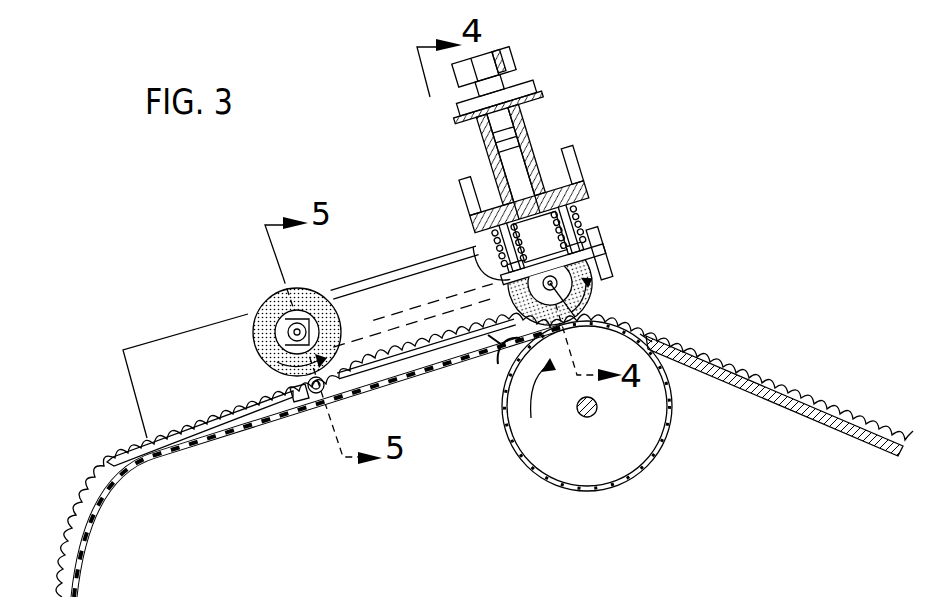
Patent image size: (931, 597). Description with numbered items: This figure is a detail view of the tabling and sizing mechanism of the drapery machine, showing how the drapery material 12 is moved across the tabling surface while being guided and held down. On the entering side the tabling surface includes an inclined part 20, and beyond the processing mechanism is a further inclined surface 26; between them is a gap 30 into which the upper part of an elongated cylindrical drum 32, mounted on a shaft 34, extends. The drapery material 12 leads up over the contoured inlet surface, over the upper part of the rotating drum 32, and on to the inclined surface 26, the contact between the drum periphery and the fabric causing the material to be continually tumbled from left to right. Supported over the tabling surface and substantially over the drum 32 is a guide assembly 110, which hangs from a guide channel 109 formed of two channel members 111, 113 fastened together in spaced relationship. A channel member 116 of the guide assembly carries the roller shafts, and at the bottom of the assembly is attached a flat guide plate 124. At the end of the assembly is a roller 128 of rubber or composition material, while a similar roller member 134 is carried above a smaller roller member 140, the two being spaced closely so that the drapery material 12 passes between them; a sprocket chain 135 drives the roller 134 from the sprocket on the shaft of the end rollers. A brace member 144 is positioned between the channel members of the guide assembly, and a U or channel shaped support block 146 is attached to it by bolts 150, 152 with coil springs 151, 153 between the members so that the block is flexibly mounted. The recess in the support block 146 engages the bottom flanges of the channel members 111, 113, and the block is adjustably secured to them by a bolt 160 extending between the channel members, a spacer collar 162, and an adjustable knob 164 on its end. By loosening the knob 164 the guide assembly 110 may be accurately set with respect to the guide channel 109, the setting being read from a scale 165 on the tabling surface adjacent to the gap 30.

The drapery material 12 is at (72, 515).
The inclined part 20 is at (306, 418).
The inclined surface 26 is at (840, 433).
The gap 30 is at (655, 322).
The cylindrical drum 32 is at (505, 456).
The shaft 34 is at (580, 418).
The guide channel 109 is at (558, 90).
The guide assembly 110 is at (131, 338).
The channel member 111 is at (489, 147).
The channel member 113 is at (526, 115).
The channel member 116 is at (191, 391).
The flat guide plate 124 is at (126, 448).
The roller 128 is at (578, 304).
The roller member 134 is at (303, 288).
The sprocket chain 135 is at (388, 302).
The smaller roller member 140 is at (332, 396).
The brace member 144 is at (588, 258).
The support block 146 is at (578, 166).
The bolt 150 is at (482, 238).
The coil spring 151 is at (497, 236).
The bolt 152 is at (580, 236).
The coil spring 153 is at (583, 202).
The bolt 160 is at (512, 145).
The spacer collar 162 is at (520, 92).
The adjustable knob 164 is at (500, 55).
The scale 165 is at (494, 360).